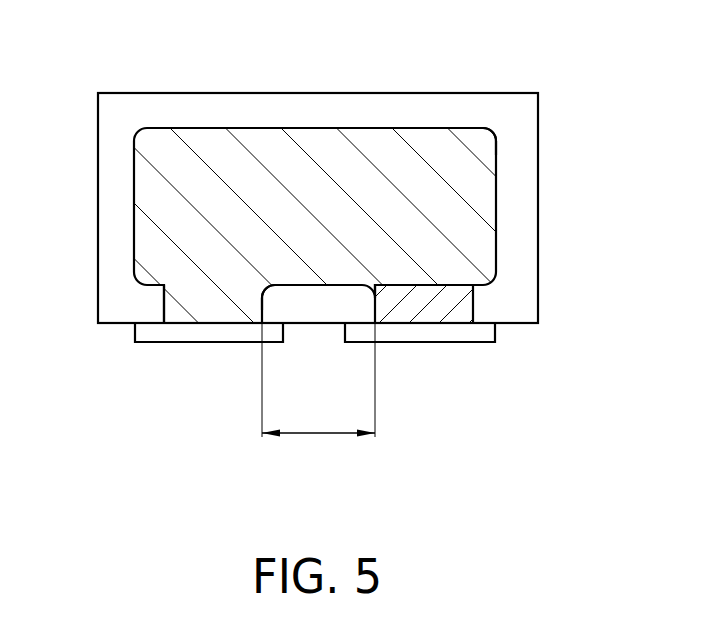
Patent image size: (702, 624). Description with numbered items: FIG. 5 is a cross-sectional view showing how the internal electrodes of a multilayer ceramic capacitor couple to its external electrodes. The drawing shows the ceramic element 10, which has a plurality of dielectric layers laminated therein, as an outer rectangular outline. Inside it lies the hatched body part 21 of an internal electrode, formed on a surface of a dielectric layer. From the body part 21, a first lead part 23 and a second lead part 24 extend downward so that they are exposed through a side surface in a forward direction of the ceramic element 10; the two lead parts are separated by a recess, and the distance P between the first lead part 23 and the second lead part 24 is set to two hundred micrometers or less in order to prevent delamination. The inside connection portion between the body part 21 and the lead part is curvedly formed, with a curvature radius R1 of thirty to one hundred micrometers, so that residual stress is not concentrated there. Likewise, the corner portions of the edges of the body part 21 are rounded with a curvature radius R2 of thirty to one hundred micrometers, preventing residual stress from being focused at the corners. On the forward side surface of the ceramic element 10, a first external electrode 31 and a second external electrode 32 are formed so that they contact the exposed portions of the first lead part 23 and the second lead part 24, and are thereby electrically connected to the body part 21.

The ceramic element 10 is at (292, 113).
The body part 21 is at (482, 202).
The first lead part 23 is at (192, 303).
The second lead part 24 is at (463, 299).
The first external electrode 31 is at (185, 332).
The second external electrode 32 is at (442, 333).
The curvature radius of the connection portion R1 is at (279, 307).
The curvature radius of the corner portion R2 is at (499, 130).
The distance between the first lead part and the second lead part P is at (318, 394).